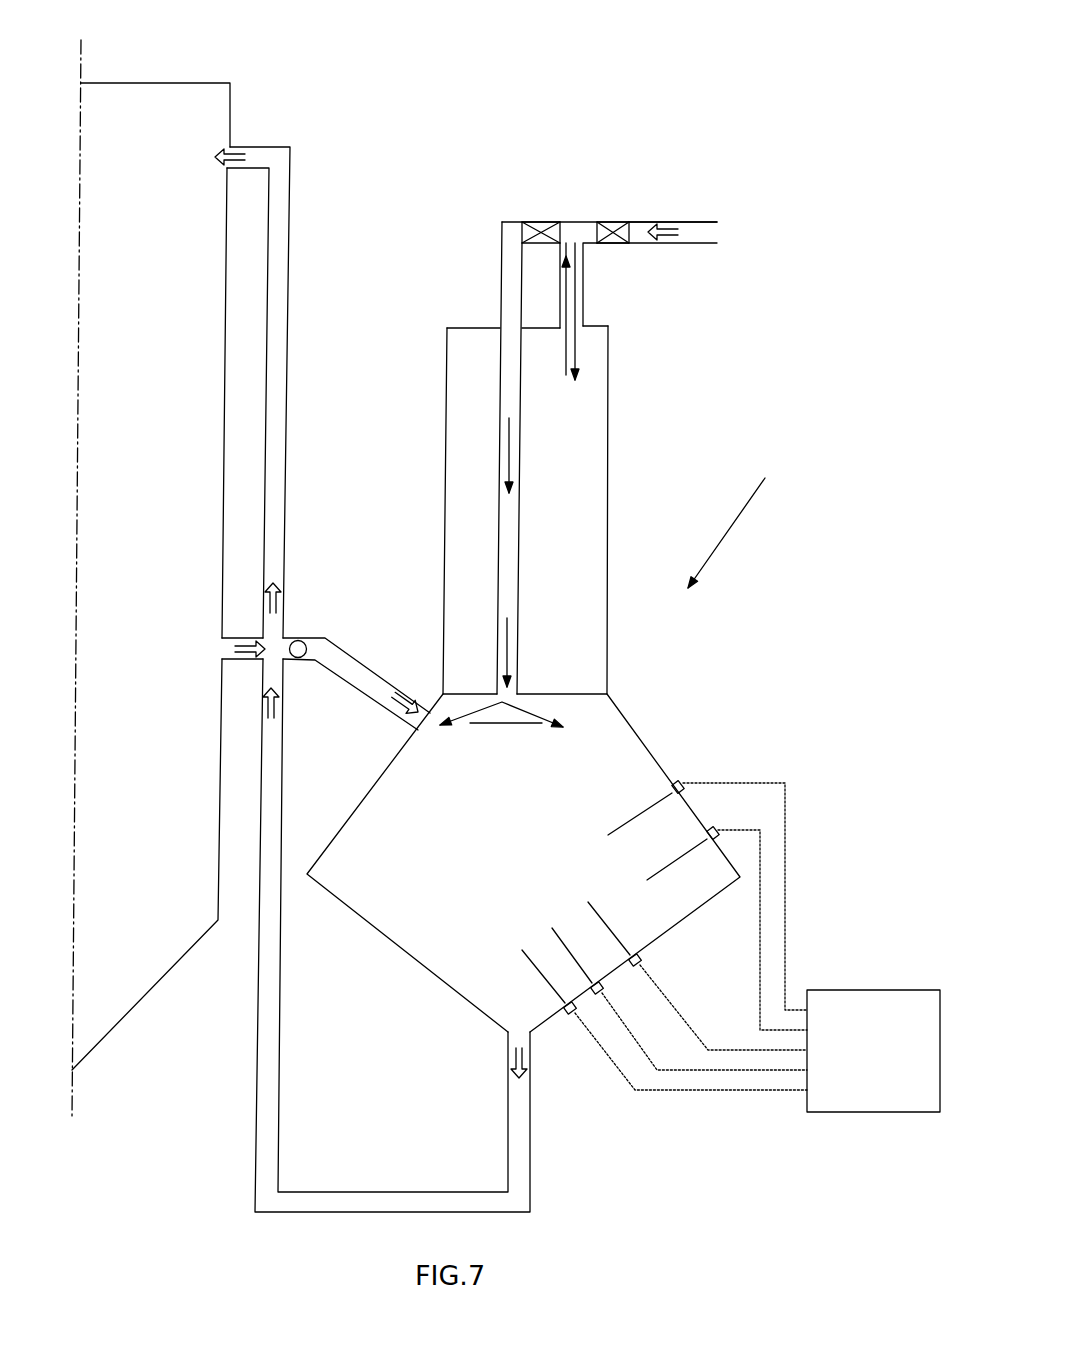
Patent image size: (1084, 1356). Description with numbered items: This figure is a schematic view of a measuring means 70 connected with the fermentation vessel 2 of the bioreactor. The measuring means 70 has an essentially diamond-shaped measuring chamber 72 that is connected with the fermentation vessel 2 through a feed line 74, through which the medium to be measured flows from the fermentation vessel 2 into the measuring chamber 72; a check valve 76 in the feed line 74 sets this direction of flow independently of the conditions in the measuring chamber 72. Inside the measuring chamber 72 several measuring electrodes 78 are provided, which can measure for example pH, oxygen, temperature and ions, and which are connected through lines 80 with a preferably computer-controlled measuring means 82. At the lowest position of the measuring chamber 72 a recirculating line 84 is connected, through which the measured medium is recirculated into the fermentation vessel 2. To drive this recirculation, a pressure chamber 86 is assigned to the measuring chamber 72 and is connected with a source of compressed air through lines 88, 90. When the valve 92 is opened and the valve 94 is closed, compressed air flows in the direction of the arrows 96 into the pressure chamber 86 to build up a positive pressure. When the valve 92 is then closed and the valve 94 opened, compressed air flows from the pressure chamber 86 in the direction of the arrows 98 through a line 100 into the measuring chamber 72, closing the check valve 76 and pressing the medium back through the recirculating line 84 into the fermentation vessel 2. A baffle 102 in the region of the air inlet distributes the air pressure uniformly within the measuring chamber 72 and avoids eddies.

The fermentation vessel 2 is at (145, 100).
The measuring means 70 is at (740, 519).
The measuring chamber 72 is at (598, 752).
The feed line 74 is at (357, 675).
The check valve 76 is at (302, 642).
The measuring electrodes 78 is at (650, 866).
The lines 80 is at (762, 905).
The measuring means 82 is at (865, 1012).
The recirculating line 84 is at (372, 1205).
The pressure chamber 86 is at (572, 506).
The line 88 is at (675, 222).
The line 90 is at (578, 268).
The valve 92 is at (605, 222).
The valve 94 is at (538, 222).
The arrows 96 is at (575, 305).
The arrows 98 is at (566, 305).
The line 100 is at (510, 272).
The baffle 102 is at (502, 725).